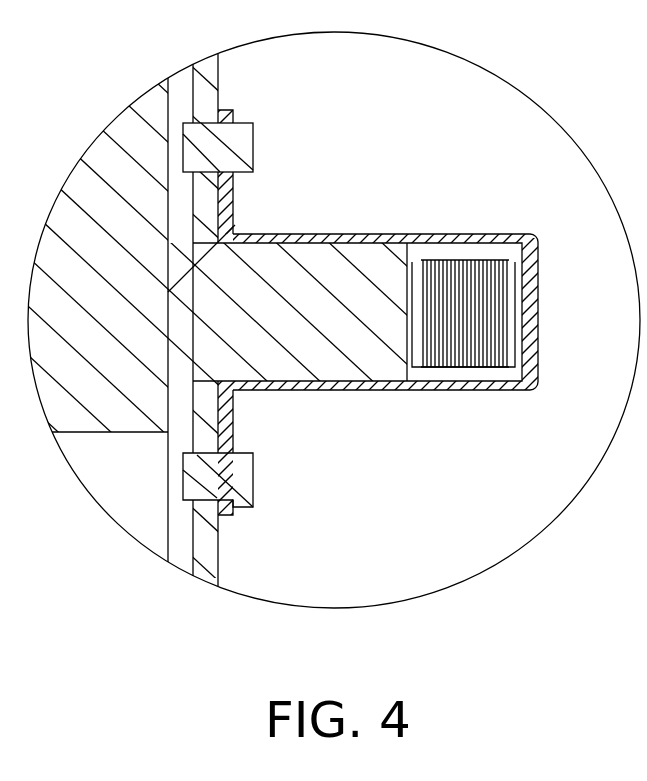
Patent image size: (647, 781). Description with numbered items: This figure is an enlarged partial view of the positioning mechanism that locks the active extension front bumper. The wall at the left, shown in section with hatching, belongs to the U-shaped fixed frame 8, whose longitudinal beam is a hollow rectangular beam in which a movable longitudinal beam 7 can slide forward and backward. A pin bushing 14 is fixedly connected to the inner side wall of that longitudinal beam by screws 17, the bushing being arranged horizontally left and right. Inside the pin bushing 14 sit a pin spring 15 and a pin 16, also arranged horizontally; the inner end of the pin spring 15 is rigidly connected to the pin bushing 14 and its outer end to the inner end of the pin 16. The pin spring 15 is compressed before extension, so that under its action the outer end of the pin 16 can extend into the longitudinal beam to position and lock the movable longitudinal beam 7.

The movable longitudinal beam 7 is at (323, 390).
The U-shaped fixed frame 8 is at (323, 390).
The pin bushing 14 is at (323, 300).
The pin spring 15 is at (492, 261).
The pin 16 is at (323, 390).
The screws 17 is at (292, 514).